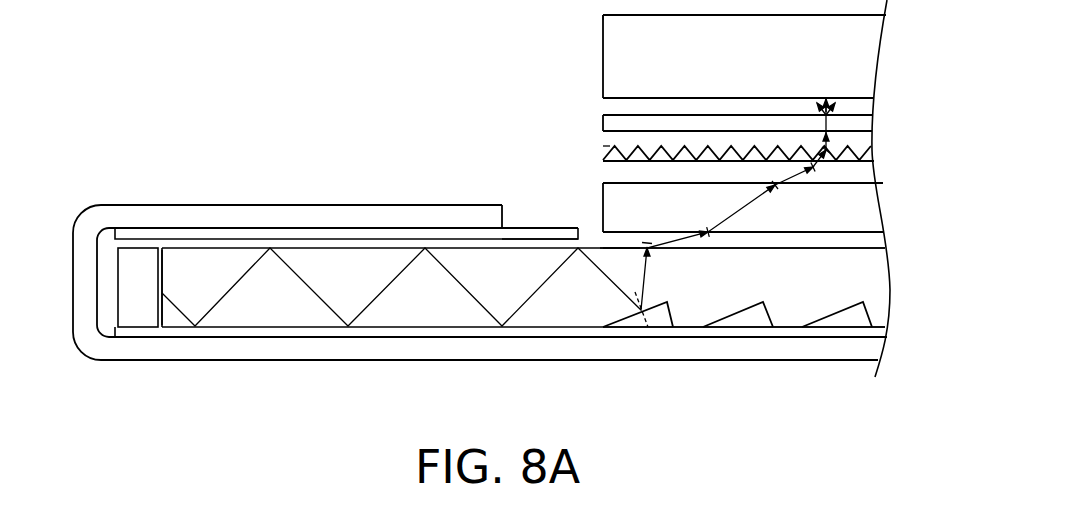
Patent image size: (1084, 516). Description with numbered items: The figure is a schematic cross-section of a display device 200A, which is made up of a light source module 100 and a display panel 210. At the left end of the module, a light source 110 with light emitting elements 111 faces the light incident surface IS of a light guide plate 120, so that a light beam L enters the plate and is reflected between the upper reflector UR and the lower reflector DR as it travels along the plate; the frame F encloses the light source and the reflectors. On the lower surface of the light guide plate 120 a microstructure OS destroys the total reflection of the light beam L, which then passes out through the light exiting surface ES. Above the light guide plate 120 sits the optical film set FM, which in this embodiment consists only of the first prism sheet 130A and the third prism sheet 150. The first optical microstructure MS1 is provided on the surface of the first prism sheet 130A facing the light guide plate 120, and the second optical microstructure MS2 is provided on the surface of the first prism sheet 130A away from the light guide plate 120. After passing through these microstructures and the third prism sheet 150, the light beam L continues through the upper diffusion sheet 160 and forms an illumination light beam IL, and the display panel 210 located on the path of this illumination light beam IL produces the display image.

The light source module 100 is at (265, 145).
The light source 110 is at (112, 283).
The light emitting element 111 is at (137, 263).
The light incident surface IS is at (161, 306).
The light beam L is at (237, 287).
The upper reflector UR is at (557, 233).
The optical film set FM is at (368, 45).
The first prism sheet 130A is at (872, 210).
The third prism sheet 150 is at (868, 157).
The upper diffusion sheet 160 is at (862, 124).
The display panel 210 is at (867, 62).
The illumination light beam IL is at (838, 112).
The light exiting surface ES is at (863, 246).
The light guide plate 120 is at (870, 282).
The lower reflector DR is at (875, 330).
The frame F is at (873, 348).
The microstructure OS is at (620, 309).
The first optical microstructure MS1 is at (621, 239).
The second optical microstructure MS2 is at (616, 181).
The display device 200A is at (952, 427).